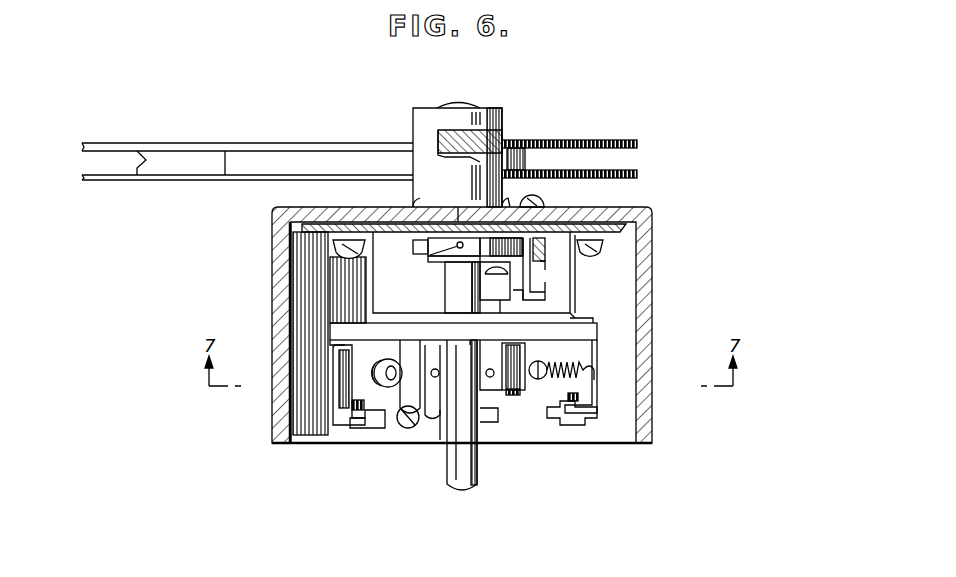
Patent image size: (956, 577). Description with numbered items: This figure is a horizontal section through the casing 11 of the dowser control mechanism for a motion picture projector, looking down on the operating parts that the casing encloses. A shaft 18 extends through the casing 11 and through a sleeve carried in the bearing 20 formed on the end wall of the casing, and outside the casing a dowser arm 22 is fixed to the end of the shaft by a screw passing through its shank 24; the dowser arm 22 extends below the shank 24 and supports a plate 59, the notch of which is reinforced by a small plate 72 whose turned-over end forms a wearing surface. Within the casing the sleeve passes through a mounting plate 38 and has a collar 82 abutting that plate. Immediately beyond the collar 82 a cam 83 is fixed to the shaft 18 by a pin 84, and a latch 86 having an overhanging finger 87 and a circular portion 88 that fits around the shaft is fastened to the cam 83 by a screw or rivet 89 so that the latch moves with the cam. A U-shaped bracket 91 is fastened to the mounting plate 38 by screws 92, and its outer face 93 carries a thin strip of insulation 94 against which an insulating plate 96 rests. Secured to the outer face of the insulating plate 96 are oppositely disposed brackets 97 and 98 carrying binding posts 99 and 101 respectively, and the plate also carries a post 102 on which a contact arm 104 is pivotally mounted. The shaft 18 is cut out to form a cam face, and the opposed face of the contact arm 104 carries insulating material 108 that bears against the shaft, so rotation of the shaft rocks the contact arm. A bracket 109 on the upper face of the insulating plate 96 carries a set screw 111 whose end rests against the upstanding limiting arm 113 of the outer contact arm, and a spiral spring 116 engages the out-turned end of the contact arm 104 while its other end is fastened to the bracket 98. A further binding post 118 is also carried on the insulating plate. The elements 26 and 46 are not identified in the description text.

The casing 11 is at (653, 284).
The shaft 18 is at (464, 495).
The bearing 20 is at (505, 189).
The dowser arm 22 is at (498, 140).
The shank 24 is at (425, 122).
The inner rod 26 is at (137, 170).
The mounting plate 38 is at (366, 216).
The tubular rod 46 is at (290, 143).
The plate 59 is at (541, 270).
The small plate 72 is at (543, 257).
The collar 82 is at (452, 208).
The cam 83 is at (413, 248).
The pin 84 is at (435, 257).
The latch 86 is at (513, 298).
The overhanging finger 87 is at (538, 291).
The circular portion 88 is at (441, 262).
The screw or rivet 89 is at (495, 281).
The U-shaped bracket 91 is at (571, 292).
The screws 92 is at (601, 249).
The outer face 93 is at (398, 321).
The strip of insulation 94 is at (592, 322).
The insulating plate 96 is at (593, 334).
The bracket 97 is at (345, 386).
The bracket 98 is at (598, 392).
The binding post 99 is at (372, 430).
The binding post 101 is at (585, 427).
The post 102 is at (512, 363).
The contact arm 104 is at (392, 361).
The insulating material 108 is at (492, 380).
The bracket 109 is at (420, 379).
The set screw 111 is at (409, 429).
The limiting arm 113 is at (437, 442).
The spiral spring 116 is at (560, 378).
The binding post 118 is at (484, 424).